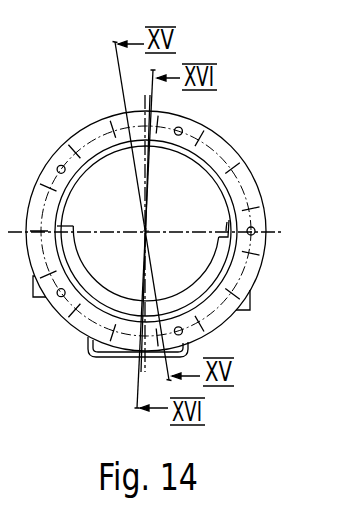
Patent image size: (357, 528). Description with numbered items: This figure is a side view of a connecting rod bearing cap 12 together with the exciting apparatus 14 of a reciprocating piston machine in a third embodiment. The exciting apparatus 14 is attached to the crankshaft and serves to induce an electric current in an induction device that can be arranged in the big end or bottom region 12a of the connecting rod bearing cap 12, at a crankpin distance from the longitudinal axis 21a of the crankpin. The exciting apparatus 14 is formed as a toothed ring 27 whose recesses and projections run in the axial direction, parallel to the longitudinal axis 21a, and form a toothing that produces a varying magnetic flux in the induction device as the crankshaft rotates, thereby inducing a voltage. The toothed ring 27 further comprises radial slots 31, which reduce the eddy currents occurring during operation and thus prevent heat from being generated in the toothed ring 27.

The exciting apparatus 14 is at (229, 143).
The radial slots 31 is at (258, 198).
The toothed ring 27 is at (257, 266).
The connecting rod bearing cap 12 is at (203, 273).
The bottom region 12a is at (92, 352).
The longitudinal axis 21a is at (152, 219).